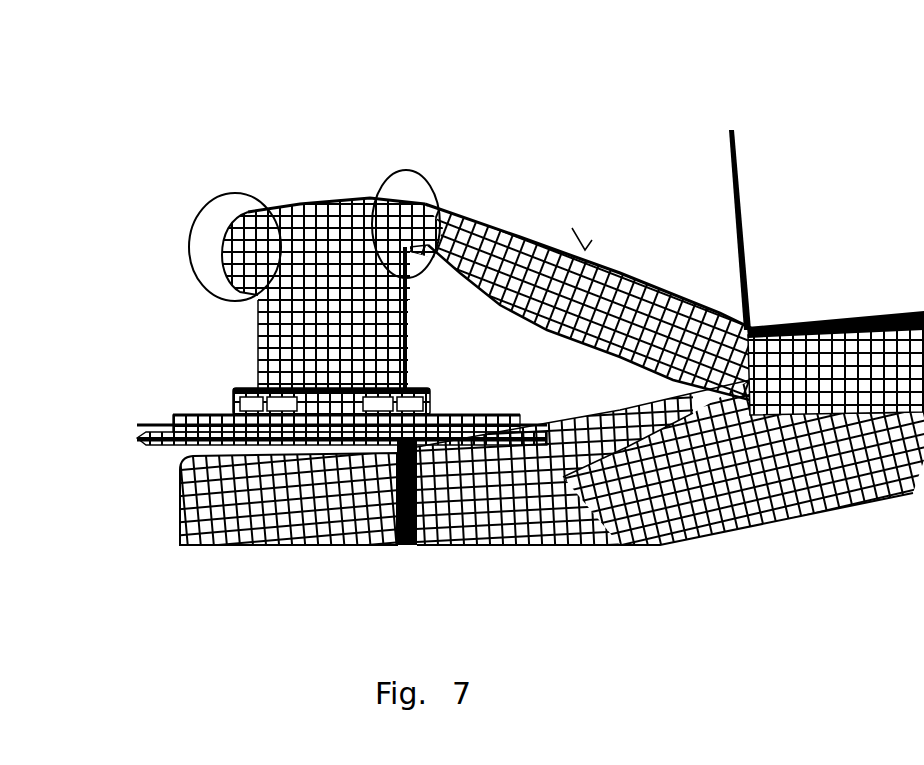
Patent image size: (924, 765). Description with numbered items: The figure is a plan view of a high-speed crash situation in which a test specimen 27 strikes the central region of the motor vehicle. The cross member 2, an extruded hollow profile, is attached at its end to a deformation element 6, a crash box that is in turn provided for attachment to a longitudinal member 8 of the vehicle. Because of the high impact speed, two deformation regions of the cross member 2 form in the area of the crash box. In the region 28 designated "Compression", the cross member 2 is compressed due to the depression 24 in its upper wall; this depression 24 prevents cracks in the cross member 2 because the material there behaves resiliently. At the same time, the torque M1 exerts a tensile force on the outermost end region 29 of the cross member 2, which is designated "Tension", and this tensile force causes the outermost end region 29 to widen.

The cross member 2 is at (643, 277).
The deformation element 6 is at (256, 343).
The longitudinal member 8 is at (178, 508).
The depression 24 is at (312, 204).
The test specimen 27 is at (861, 198).
The region 28 is at (440, 198).
The outermost end region 29 is at (237, 194).
The torque M1 is at (581, 252).